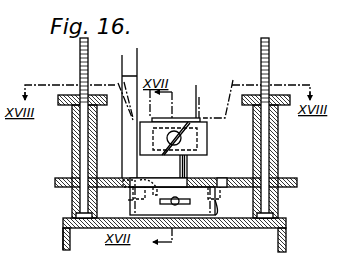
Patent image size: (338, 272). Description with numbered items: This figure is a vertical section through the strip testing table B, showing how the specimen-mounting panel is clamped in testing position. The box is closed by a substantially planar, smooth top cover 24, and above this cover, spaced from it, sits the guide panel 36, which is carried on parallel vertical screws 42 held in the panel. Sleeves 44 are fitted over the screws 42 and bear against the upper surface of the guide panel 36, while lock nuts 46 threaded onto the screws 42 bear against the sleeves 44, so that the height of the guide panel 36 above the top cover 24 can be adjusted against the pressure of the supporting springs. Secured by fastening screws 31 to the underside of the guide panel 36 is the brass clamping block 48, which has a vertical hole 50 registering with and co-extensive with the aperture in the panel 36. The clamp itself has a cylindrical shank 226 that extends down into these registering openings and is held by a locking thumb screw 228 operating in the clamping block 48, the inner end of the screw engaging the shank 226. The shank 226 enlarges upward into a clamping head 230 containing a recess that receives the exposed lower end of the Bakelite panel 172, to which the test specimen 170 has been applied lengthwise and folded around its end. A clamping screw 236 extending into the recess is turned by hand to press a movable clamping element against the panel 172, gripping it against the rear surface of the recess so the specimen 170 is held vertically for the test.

The top cover 24 is at (287, 222).
The bracket 31 is at (128, 204).
The guide panel 36 is at (297, 183).
The screws 42 is at (80, 52).
The sleeves 44 is at (72, 152).
The lock nuts 46 is at (70, 96).
The clamping block 48 is at (220, 204).
The hole 50 is at (150, 182).
The test specimen 170 is at (180, 106).
The Bakelite panel 172 is at (197, 148).
The cylindrical shank 226 is at (187, 168).
The locking thumb screw 228 is at (204, 224).
The clamping head 230 is at (207, 127).
The clamping screw 236 is at (192, 108).
The testing table B is at (60, 243).